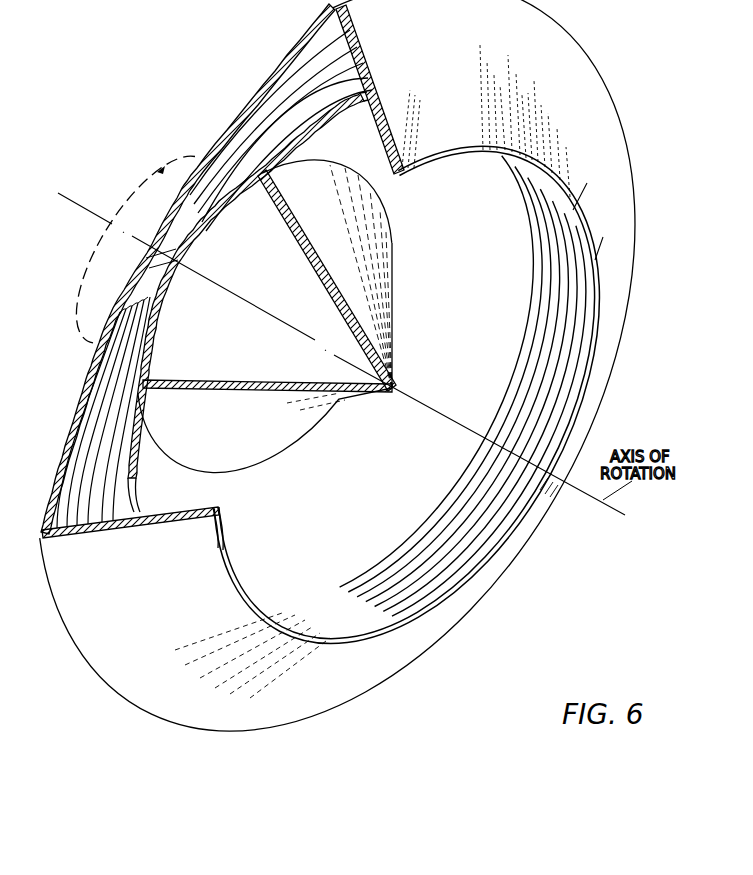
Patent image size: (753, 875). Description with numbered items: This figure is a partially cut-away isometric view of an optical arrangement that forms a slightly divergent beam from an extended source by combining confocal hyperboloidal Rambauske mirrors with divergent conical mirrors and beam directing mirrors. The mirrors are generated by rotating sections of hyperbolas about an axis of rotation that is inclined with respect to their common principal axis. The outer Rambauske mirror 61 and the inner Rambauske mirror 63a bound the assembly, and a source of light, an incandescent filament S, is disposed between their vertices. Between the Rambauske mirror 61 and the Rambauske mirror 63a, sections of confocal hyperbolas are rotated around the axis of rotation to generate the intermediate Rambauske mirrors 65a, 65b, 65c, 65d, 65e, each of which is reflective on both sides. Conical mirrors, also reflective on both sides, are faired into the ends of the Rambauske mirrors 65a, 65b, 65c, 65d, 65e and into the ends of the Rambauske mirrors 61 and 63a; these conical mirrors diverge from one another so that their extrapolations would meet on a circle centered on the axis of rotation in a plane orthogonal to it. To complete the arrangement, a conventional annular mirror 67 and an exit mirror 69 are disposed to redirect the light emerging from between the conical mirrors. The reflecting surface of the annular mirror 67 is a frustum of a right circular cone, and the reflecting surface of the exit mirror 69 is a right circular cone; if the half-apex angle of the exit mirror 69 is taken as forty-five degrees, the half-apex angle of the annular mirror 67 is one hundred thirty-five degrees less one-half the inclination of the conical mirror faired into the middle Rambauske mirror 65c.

The Rambauske mirror 61 is at (222, 133).
The Rambauske mirror 63a is at (335, 125).
The Rambauske mirror 65a is at (250, 117).
The Rambauske mirror 65b is at (275, 107).
The Rambauske mirror 65c is at (302, 92).
The Rambauske mirror 65d is at (327, 80).
The Rambauske mirror 65e is at (333, 90).
The annular mirror 67 is at (453, 160).
The exit mirror 69 is at (393, 295).
The incandescent filament S is at (178, 204).